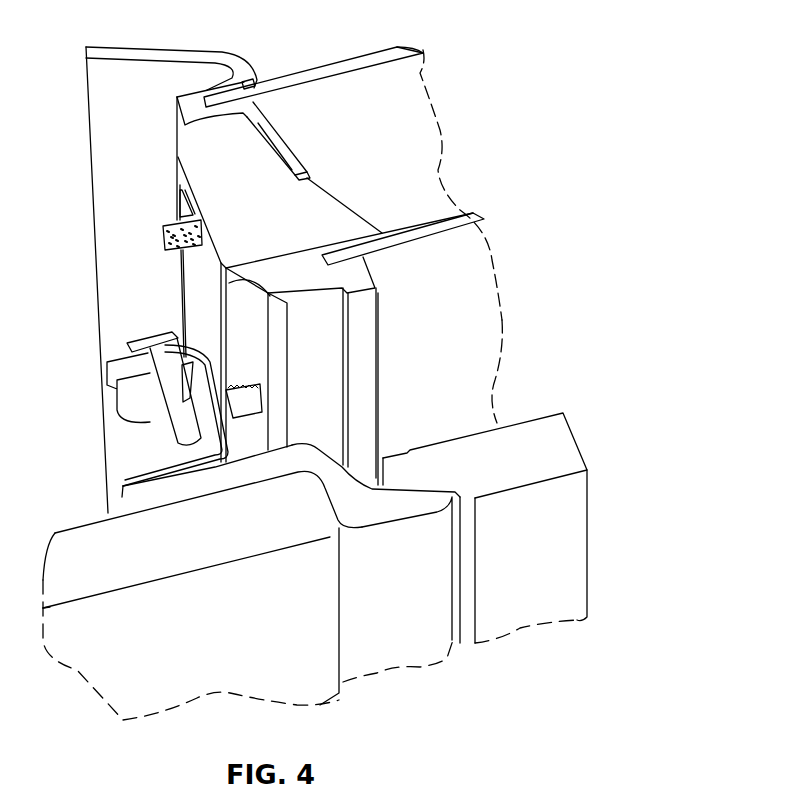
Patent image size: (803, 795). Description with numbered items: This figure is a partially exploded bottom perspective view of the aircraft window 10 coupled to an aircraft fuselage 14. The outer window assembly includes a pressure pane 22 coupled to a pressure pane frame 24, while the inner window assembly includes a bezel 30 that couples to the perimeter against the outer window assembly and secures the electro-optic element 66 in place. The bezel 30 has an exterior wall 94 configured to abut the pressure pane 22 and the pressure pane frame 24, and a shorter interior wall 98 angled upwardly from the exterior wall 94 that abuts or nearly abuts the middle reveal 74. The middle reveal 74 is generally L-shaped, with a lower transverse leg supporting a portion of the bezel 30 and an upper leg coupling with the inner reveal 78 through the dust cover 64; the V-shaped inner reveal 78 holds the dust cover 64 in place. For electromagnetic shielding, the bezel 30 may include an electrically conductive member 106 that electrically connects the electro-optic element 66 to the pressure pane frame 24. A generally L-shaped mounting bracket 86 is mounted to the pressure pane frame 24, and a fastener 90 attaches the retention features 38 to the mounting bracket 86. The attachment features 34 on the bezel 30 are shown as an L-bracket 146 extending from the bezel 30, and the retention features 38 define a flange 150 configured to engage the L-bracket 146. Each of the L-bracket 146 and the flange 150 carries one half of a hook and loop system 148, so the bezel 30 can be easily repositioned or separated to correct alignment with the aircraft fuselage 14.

The aircraft window 10 is at (607, 55).
The aircraft fuselage 14 is at (137, 680).
The pressure pane 22 is at (542, 593).
The pressure pane frame 24 is at (415, 630).
The bezel 30 is at (200, 157).
The attachment features 34 is at (178, 196).
The retention features 38 is at (275, 377).
The dust cover 64 is at (417, 127).
The electro-optic element 66 is at (465, 297).
The middle reveal 74 is at (287, 133).
The inner reveal 78 is at (168, 80).
The mounting bracket 86 is at (125, 483).
The fastener 90 is at (140, 340).
The exterior wall 94 is at (363, 327).
The interior wall 98 is at (348, 203).
The electrically conductive member 106 is at (345, 207).
The L-bracket 146 is at (181, 209).
The hook and loop system 148 is at (245, 380).
The flange 150 is at (257, 397).